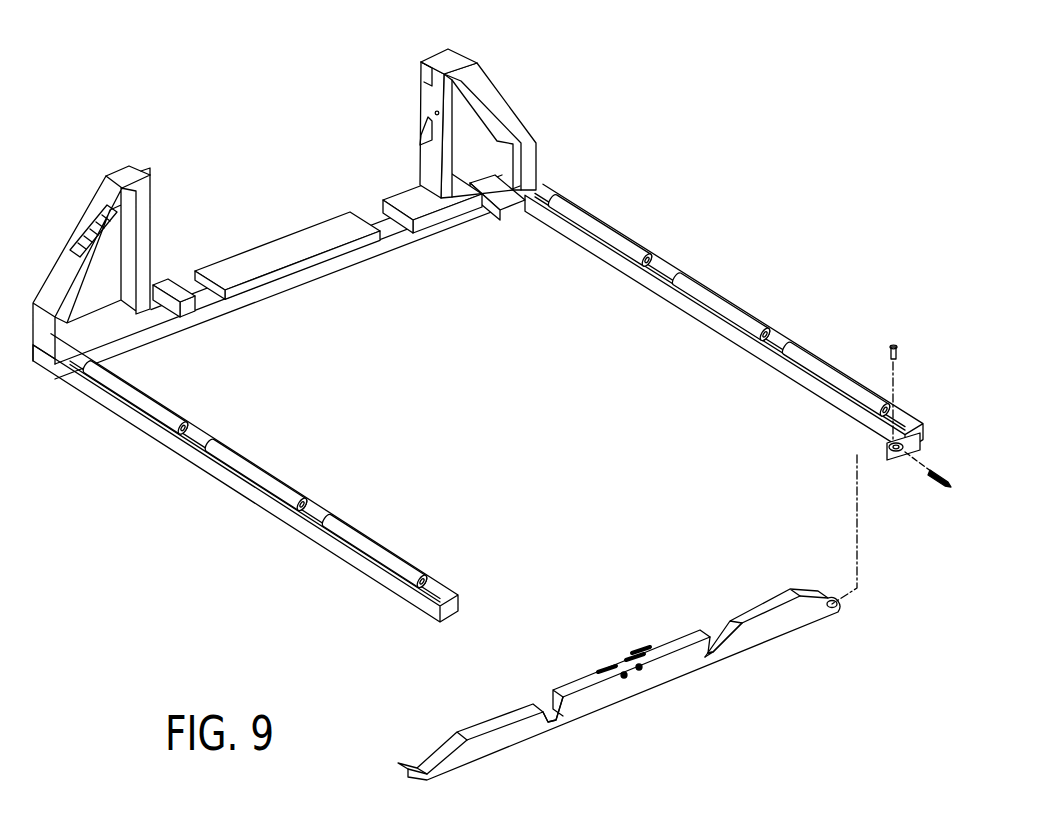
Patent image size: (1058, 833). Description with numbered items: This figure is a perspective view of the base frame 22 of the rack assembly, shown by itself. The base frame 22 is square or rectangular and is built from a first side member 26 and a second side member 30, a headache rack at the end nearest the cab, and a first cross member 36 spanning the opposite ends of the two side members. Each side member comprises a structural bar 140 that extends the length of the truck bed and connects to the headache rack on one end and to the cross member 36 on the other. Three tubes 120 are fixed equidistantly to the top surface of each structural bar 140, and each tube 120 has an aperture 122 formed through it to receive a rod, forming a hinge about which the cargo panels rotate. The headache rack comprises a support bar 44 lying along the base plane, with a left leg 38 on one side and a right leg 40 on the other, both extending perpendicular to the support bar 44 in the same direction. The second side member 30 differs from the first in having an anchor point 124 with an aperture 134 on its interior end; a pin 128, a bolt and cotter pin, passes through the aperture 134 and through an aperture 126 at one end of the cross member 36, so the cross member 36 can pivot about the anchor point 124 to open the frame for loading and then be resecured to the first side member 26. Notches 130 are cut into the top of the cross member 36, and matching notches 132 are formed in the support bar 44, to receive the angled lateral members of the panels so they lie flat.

The base frame 22 is at (338, 58).
The first side member 26 is at (182, 452).
The second side member 30 is at (658, 275).
The first cross member 36 is at (610, 706).
The left leg 38 is at (116, 171).
The right leg 40 is at (477, 70).
The support bar 44 is at (253, 260).
The tube 120 is at (128, 398).
The aperture 122 is at (183, 430).
The anchor point 124 is at (890, 457).
The aperture 126 is at (834, 612).
The pin 128 is at (890, 352).
The notch 130 is at (552, 726).
The notch 132 is at (185, 294).
The aperture 134 is at (908, 437).
The structural bar 140 is at (315, 530).